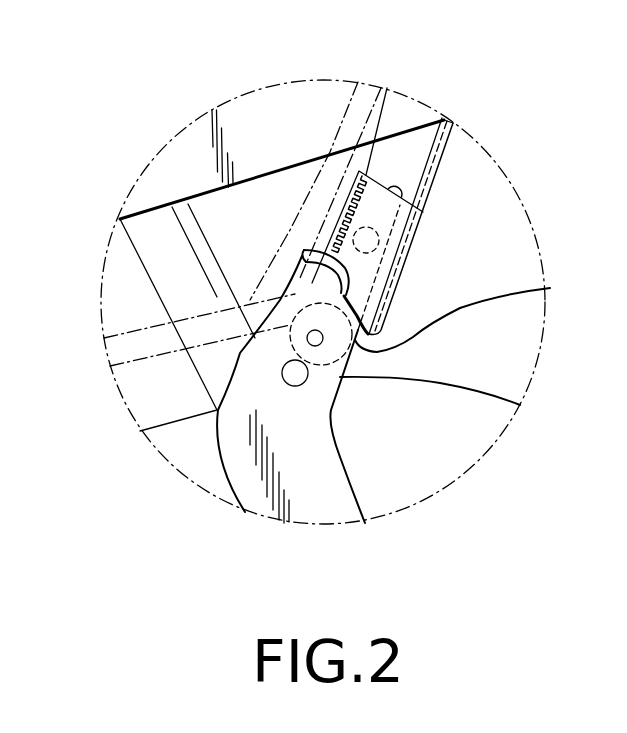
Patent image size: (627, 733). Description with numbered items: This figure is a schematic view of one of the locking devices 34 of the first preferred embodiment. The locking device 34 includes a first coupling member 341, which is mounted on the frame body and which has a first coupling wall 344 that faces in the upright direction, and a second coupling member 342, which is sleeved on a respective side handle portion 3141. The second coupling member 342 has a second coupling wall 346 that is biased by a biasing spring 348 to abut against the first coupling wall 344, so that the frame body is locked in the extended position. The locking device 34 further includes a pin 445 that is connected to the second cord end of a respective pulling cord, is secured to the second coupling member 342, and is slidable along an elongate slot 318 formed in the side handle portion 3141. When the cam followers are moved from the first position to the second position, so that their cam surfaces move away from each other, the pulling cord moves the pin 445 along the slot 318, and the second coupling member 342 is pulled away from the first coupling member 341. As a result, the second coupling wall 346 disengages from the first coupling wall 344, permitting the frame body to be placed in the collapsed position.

The locking device 34 is at (453, 360).
The elongate slot 318 is at (398, 185).
The first coupling member 341 is at (242, 462).
The second coupling member 342 is at (423, 212).
The first coupling wall 344 is at (533, 292).
The second coupling wall 346 is at (344, 291).
The biasing spring 348 is at (335, 206).
The pin 445 is at (370, 226).
The side handle portion 3141 is at (432, 166).